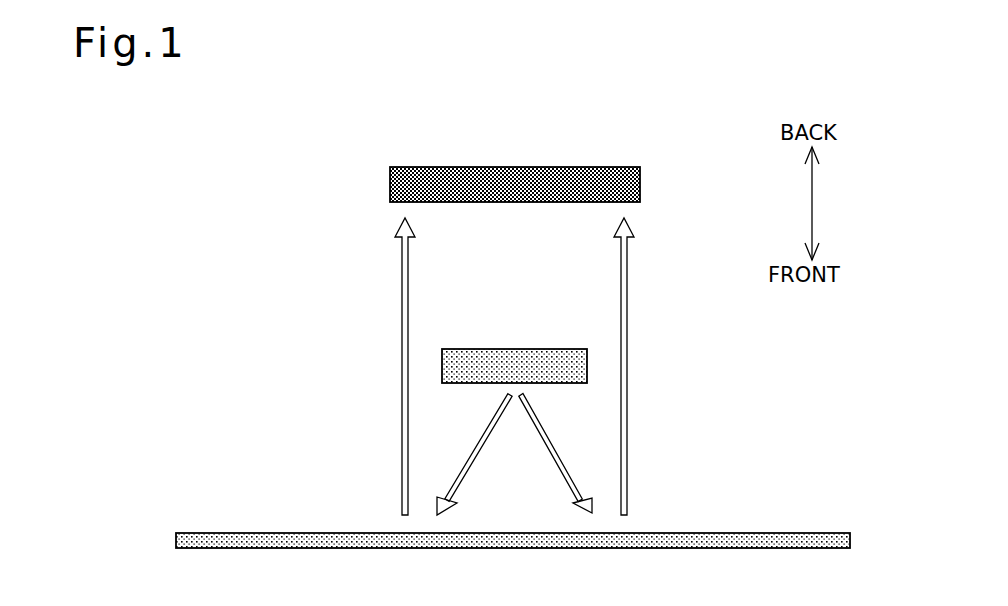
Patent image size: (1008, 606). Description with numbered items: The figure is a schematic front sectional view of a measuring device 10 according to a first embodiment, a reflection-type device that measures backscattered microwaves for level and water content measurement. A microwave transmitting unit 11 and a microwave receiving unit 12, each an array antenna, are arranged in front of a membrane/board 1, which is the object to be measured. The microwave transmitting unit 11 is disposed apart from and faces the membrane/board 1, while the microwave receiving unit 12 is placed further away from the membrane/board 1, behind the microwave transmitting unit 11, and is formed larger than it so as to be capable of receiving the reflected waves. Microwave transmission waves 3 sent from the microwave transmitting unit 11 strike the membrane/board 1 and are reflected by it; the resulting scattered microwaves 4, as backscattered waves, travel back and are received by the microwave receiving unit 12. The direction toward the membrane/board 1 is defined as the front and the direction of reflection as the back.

The measuring device 10 is at (262, 215).
The microwave receiving unit 12 is at (561, 167).
The microwave transmitting unit 11 is at (545, 349).
The scattered microwaves 4 is at (402, 358).
The microwave transmission waves 3 is at (476, 445).
The membrane/board 1 is at (765, 533).